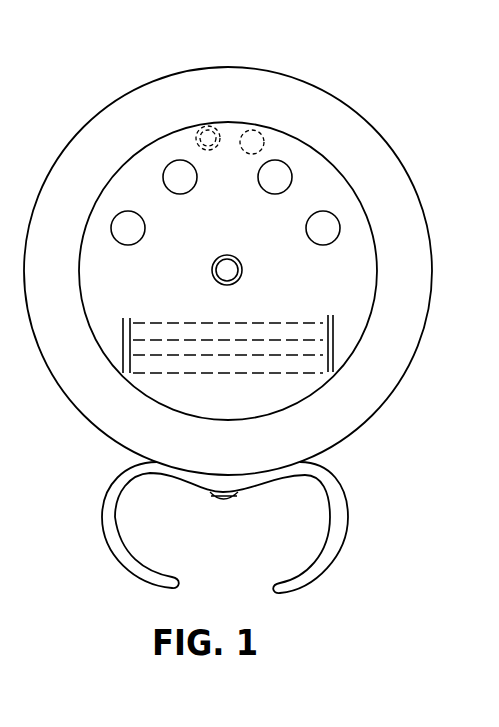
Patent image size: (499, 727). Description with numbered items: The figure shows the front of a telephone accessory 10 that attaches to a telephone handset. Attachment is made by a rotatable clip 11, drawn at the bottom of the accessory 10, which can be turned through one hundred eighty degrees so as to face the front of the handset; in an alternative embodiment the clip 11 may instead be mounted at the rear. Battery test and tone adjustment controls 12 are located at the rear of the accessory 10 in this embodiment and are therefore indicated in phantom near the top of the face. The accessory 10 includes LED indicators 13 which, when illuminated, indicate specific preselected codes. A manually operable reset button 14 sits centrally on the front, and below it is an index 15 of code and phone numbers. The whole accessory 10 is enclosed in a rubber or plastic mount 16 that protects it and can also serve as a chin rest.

The telephone accessory 10 is at (357, 102).
The rotatable clip 11 is at (343, 488).
The battery test and tone adjustment controls 12 is at (214, 124).
The LED indicators 13 is at (313, 220).
The manually operable reset button 14 is at (242, 270).
The index 15 is at (210, 373).
The mount 16 is at (372, 415).